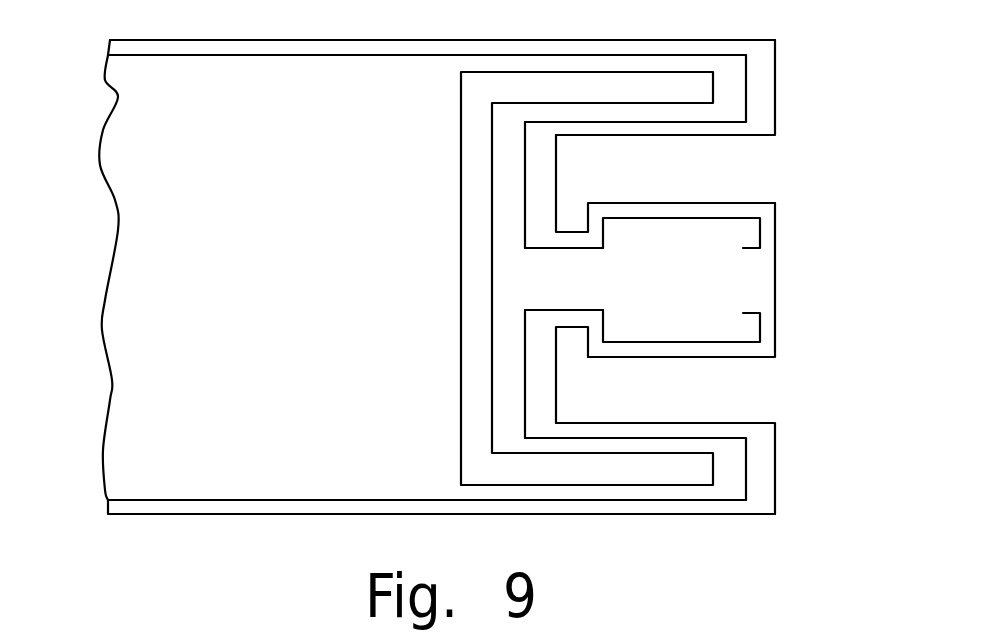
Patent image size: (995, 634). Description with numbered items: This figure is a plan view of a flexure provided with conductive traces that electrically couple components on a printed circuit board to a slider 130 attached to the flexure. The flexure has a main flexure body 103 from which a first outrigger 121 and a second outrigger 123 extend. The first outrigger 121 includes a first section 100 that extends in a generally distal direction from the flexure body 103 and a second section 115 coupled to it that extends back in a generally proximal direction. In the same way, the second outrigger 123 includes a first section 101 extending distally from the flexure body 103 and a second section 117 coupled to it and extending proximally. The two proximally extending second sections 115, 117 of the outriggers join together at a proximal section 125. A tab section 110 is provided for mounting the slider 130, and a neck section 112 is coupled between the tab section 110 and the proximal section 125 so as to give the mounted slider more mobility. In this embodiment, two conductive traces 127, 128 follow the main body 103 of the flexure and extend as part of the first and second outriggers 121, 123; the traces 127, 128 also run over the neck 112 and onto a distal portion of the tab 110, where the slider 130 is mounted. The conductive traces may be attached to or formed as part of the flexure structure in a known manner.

The first section of first outrigger 100 is at (510, 47).
The first section of second outrigger 101 is at (560, 508).
The flexure body 103 is at (243, 286).
The tab section 110 is at (743, 268).
The neck section 112 is at (570, 298).
The second section of first outrigger 115 is at (652, 137).
The second section of second outrigger 117 is at (676, 423).
The first outrigger 121 is at (767, 75).
The second outrigger 123 is at (766, 477).
The proximal section 125 is at (507, 117).
The conductive trace 127 is at (118, 54).
The conductive trace 128 is at (288, 500).
The slider 130 is at (740, 173).